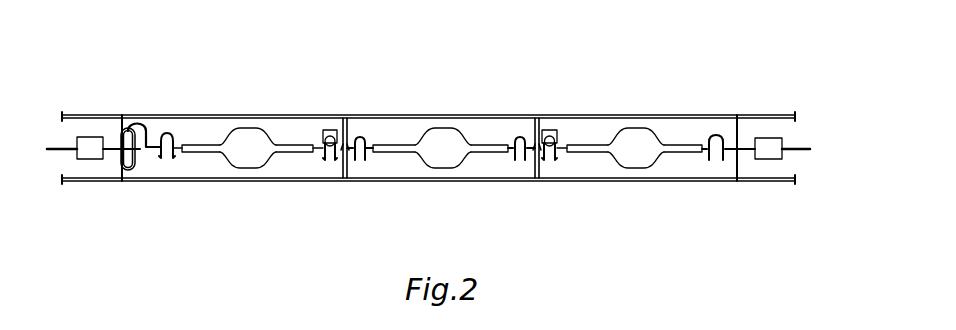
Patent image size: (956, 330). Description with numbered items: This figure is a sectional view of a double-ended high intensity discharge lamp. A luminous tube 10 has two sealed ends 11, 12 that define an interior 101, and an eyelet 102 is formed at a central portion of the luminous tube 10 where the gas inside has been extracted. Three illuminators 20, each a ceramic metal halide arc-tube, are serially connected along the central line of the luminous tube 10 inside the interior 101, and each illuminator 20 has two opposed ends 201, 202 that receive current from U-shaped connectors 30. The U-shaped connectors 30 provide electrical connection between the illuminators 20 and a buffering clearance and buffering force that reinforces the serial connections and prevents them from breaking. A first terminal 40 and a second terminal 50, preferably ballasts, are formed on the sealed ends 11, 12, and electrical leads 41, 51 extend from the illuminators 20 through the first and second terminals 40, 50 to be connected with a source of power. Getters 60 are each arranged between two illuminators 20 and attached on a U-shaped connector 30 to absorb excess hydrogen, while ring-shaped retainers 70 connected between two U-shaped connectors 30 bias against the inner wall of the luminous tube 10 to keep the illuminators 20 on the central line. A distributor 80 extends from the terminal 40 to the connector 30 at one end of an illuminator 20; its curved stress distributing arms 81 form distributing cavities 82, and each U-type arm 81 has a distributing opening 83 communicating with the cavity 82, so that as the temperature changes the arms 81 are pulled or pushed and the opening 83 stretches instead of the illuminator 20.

The luminous tube 10 is at (430, 142).
The interior 101 is at (684, 122).
The eyelet 102 is at (444, 184).
The sealed end 11 is at (768, 180).
The sealed end 12 is at (90, 178).
The illuminator 20 is at (437, 179).
The opposed end 201 is at (203, 150).
The opposed end 202 is at (297, 148).
The U-shaped connector 30 is at (167, 134).
The first terminal 40 is at (766, 140).
The electrical lead 41 is at (808, 148).
The second terminal 50 is at (92, 140).
The electrical lead 51 is at (47, 148).
The getter 60 is at (330, 130).
The ring-shaped retainer 70 is at (542, 168).
The distributor 80 is at (122, 142).
The curved stress distributing arm 81 is at (130, 166).
The distributing cavity 82 is at (135, 125).
The distributing opening 83 is at (142, 157).